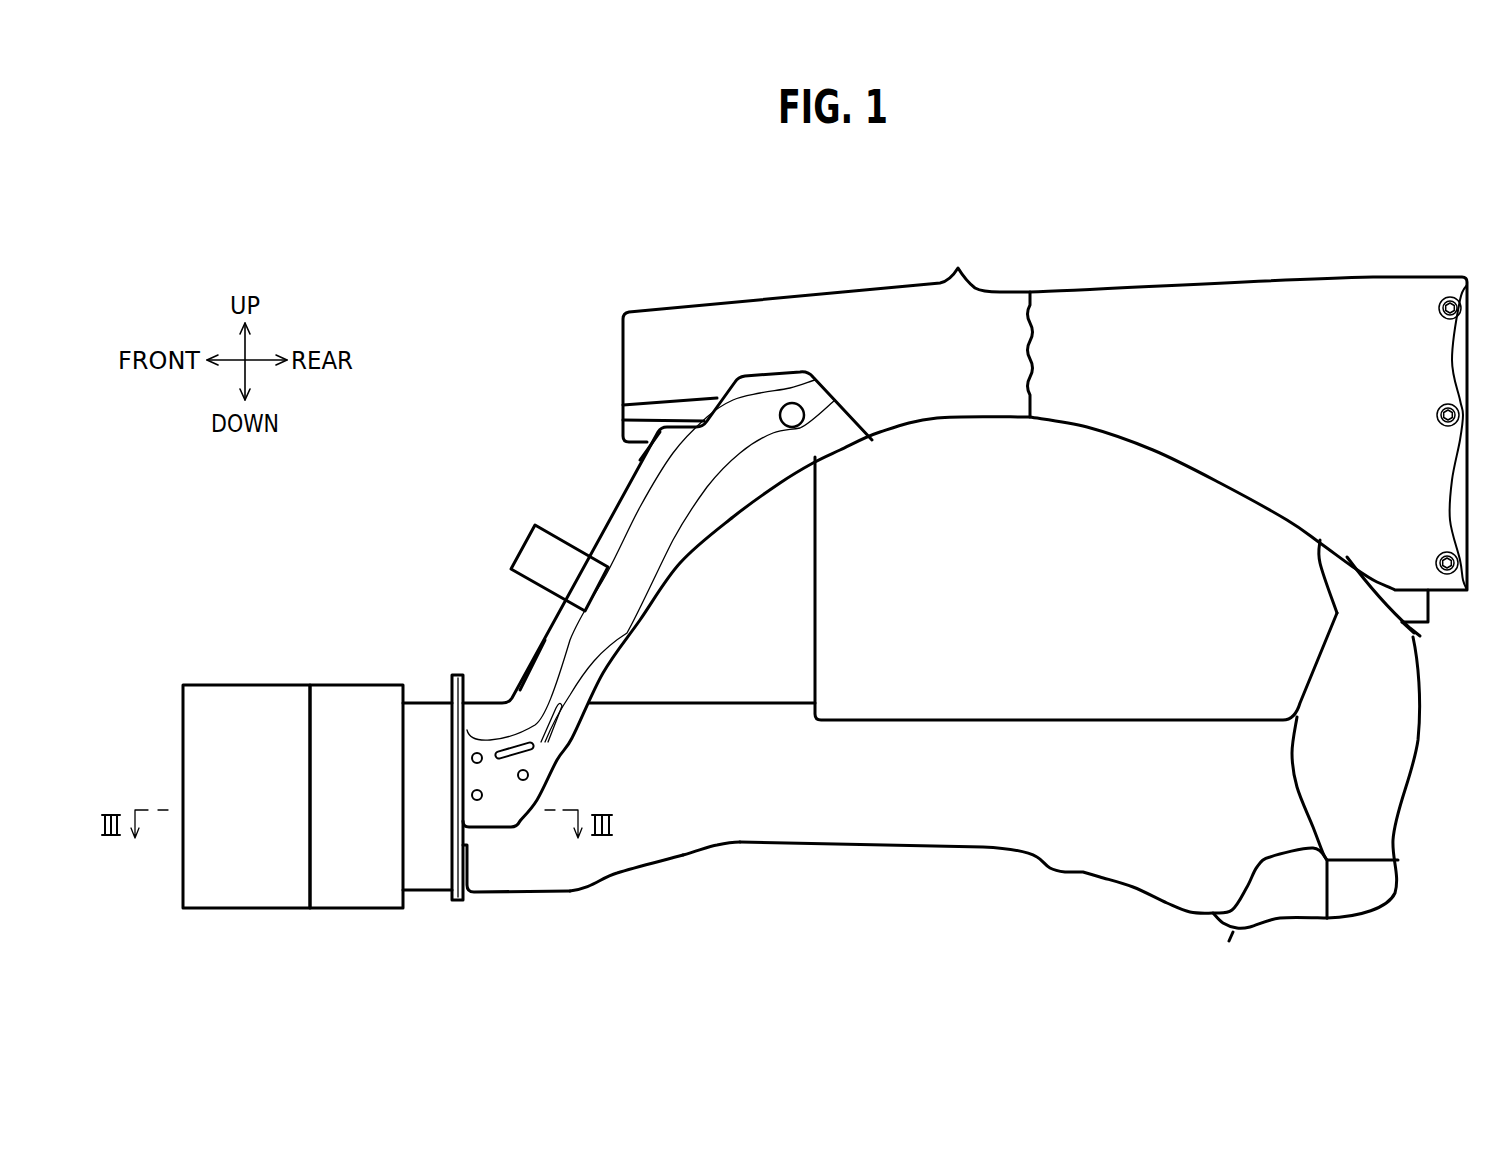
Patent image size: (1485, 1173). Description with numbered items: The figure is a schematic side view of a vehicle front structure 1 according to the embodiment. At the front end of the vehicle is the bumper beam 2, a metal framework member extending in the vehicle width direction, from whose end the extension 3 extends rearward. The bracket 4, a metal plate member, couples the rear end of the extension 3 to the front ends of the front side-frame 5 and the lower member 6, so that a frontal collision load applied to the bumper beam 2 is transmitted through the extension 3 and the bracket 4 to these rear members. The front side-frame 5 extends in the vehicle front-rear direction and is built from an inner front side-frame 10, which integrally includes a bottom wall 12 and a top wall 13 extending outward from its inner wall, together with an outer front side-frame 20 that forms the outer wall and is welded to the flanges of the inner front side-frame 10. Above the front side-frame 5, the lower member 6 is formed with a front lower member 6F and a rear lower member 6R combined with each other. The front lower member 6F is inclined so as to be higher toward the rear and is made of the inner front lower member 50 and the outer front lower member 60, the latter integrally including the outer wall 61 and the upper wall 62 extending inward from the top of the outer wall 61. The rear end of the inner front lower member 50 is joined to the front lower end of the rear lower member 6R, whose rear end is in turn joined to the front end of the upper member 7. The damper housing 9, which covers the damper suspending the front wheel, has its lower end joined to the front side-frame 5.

The vehicle front structure 1 is at (566, 272).
The bumper beam 2 is at (243, 700).
The extension 3 is at (355, 702).
The bracket 4 is at (455, 680).
The front side-frame 5 is at (877, 830).
The lower member 6 is at (748, 511).
The rear lower member 6R is at (820, 308).
The front lower member 6F is at (652, 468).
The upper member 7 is at (1242, 310).
The damper housing 9 is at (840, 550).
The inner front side-frame 10 is at (525, 875).
The bottom wall 12 is at (620, 875).
The top wall 13 is at (733, 703).
The outer front side-frame 20 is at (727, 830).
The inner front lower member 50 is at (680, 568).
The outer front lower member 60 is at (545, 632).
The outer wall 61 is at (612, 540).
The upper wall 62 is at (622, 492).